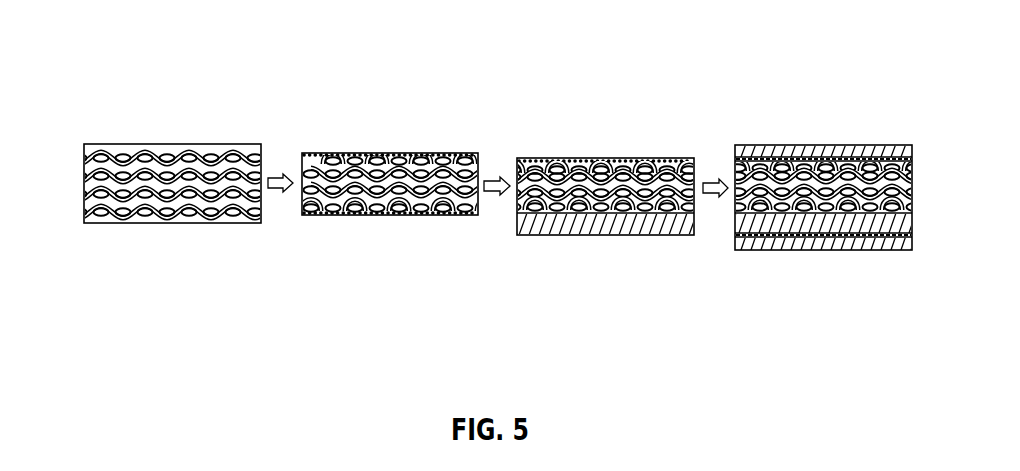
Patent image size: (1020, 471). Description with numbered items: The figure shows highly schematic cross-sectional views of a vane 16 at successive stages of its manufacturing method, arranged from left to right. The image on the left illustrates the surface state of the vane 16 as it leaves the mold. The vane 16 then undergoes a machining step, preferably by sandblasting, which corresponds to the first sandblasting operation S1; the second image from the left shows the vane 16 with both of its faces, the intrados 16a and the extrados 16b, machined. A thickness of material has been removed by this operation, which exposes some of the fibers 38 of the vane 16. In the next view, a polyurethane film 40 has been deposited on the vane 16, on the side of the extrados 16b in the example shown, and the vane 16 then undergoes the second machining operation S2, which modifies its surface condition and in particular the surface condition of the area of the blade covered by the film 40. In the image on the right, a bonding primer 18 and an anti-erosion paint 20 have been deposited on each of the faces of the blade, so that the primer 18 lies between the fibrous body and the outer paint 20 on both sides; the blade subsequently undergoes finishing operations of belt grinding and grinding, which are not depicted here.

The vane 16 is at (207, 152).
The intrados 16a is at (383, 157).
The extrados 16b is at (452, 217).
The fibers 38 is at (425, 175).
The polyurethane film 40 is at (543, 220).
The bonding primer 18 is at (810, 232).
The anti-erosion paint 20 is at (850, 150).
The first sandblasting operation S1 is at (283, 195).
The second machining operation S2 is at (713, 178).